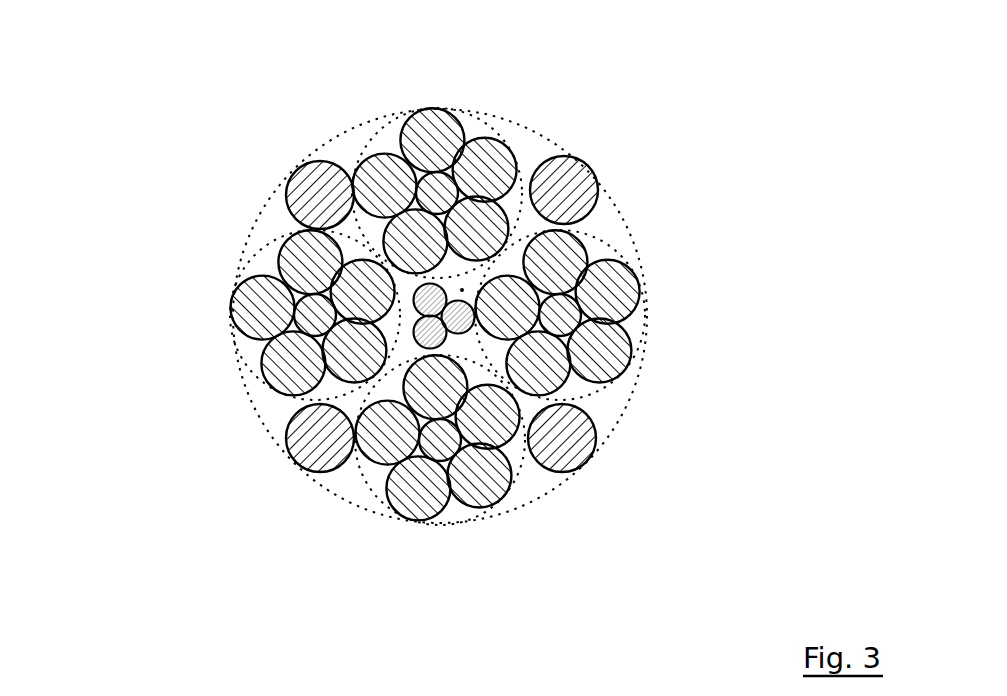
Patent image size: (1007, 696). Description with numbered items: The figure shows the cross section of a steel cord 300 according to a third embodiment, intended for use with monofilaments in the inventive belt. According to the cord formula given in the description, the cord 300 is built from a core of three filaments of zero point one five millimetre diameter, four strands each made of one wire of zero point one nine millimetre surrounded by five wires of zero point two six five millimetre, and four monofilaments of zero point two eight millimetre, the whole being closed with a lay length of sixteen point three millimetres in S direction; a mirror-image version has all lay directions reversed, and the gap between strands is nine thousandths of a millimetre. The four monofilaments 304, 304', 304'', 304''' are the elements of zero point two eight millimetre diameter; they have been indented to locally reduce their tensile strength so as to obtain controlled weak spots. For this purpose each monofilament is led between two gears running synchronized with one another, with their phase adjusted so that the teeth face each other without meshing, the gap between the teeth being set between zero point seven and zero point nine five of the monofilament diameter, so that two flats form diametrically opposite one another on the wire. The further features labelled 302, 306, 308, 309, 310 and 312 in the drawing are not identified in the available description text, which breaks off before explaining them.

The cord 300 is at (172, 120).
The strand 302 is at (592, 395).
The monofilament 304 is at (608, 169).
The monofilament 304' is at (271, 169).
The monofilament 304'' is at (268, 463).
The monofilament 304''' is at (617, 466).
The outer wire of strand 306 is at (622, 292).
The interstitial filler space 308 is at (463, 288).
The core wires 309 is at (428, 300).
The center wire of strand 310 is at (565, 317).
The outer sheath 312 is at (255, 409).